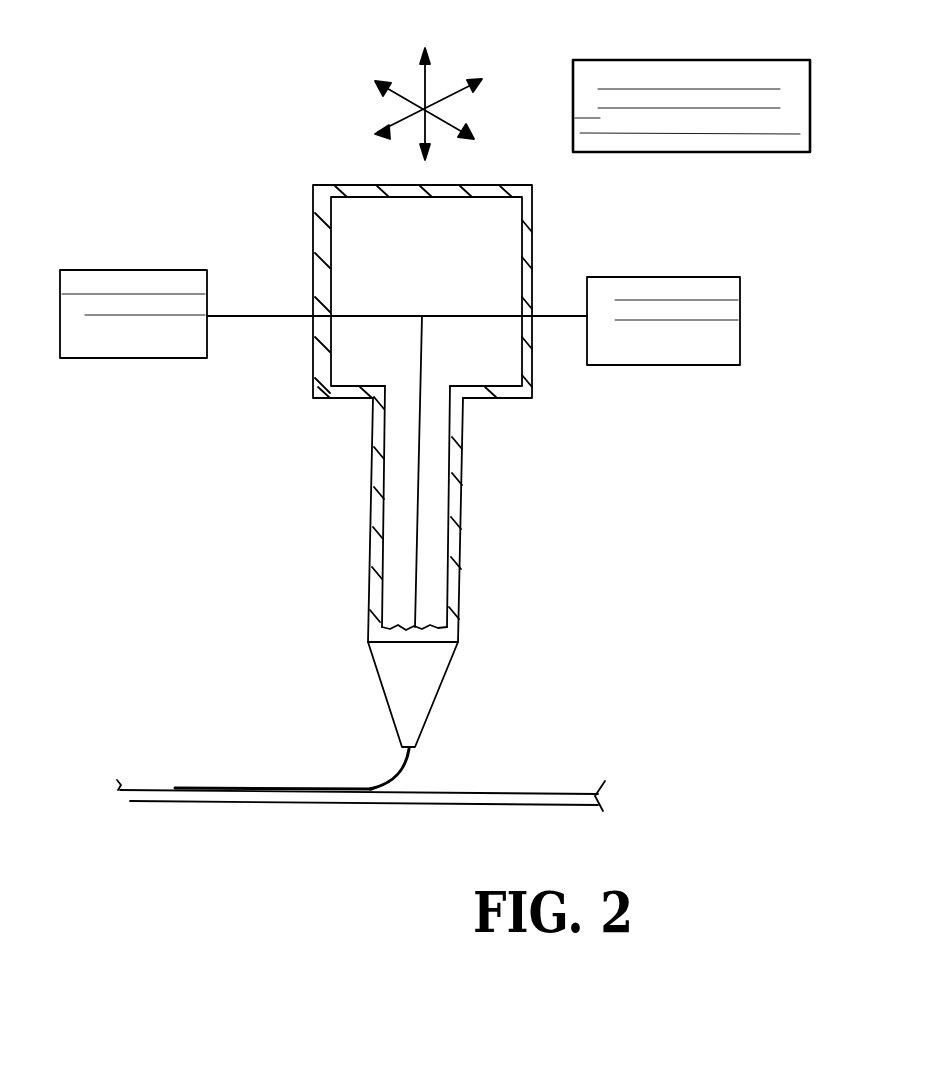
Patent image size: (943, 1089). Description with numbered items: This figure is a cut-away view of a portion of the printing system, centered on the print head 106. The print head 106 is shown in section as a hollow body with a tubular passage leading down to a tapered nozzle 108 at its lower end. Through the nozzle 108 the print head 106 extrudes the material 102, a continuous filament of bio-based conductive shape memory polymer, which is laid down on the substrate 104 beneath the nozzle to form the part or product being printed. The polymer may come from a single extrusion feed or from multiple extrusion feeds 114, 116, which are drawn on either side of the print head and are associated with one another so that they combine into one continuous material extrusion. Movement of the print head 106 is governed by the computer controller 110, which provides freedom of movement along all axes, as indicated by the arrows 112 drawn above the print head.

The extruded material 102 is at (351, 762).
The substrate 104 is at (368, 771).
The print head 106 is at (441, 413).
The nozzle 108 is at (456, 694).
The computer controller 110 is at (691, 76).
The arrows 112 is at (451, 96).
The extrusion feed 114 is at (186, 286).
The extrusion feed 116 is at (636, 293).